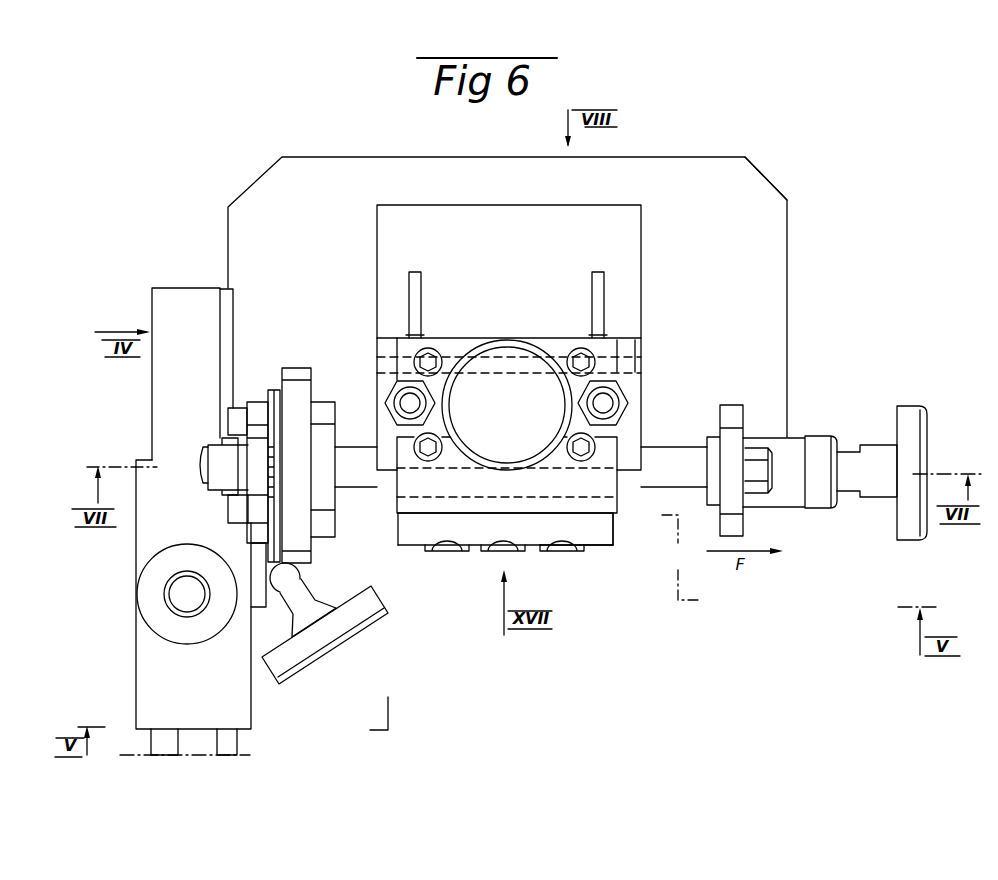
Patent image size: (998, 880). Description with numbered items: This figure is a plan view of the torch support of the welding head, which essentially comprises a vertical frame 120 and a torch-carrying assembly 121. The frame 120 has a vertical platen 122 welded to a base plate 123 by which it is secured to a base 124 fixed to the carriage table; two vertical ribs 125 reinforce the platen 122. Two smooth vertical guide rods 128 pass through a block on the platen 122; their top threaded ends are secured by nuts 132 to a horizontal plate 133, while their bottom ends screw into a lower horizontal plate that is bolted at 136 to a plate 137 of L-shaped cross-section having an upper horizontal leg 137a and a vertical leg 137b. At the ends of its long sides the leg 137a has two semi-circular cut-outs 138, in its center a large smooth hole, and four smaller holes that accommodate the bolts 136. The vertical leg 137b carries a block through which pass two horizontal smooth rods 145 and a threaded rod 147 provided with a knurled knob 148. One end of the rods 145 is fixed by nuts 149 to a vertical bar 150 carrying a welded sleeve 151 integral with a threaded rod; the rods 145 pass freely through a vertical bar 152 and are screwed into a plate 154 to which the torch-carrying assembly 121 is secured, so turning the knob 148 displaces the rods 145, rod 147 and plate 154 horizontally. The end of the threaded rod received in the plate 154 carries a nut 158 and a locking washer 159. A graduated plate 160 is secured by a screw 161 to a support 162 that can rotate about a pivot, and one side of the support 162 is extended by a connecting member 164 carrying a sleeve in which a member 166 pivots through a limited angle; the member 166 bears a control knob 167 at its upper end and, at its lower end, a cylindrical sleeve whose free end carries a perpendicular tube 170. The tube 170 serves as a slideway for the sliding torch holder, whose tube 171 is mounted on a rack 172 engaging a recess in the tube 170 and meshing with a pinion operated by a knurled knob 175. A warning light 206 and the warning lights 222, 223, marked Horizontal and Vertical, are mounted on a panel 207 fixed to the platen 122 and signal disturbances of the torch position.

The vertical frame 120 is at (634, 538).
The torch-carrying assembly 121 is at (132, 406).
The vertical platen 122 is at (625, 360).
The base plate 123 is at (525, 211).
The base 124 is at (747, 193).
The vertical ribs 125 is at (416, 278).
The smooth vertical guide rods 128 is at (412, 403).
The nuts 132 is at (392, 403).
The horizontal plate 133 is at (385, 387).
The bolts 136 is at (432, 350).
The L-shaped plate 137 is at (507, 405).
The upper horizontal leg 137a is at (607, 507).
The vertical leg 137b is at (397, 506).
The semi-circular cut-outs 138 is at (412, 378).
The horizontal smooth rods 145 is at (658, 462).
The threaded rod 147 is at (846, 465).
The knurled knob 148 is at (908, 425).
The nuts 149 is at (757, 462).
The vertical bar 150 is at (734, 414).
The welded sleeve 151 is at (771, 496).
The vertical bar 152 is at (322, 410).
The plate 154 is at (298, 375).
The nut 158 is at (227, 450).
The locking washer 159 is at (243, 478).
The graduated plate 160 is at (275, 395).
The screw 161 is at (237, 423).
The support 162 is at (252, 408).
The connecting member 164 is at (250, 594).
The pivoting member 166 is at (152, 613).
The control knob 167 is at (182, 590).
The tube 170 is at (148, 660).
The tube 171 is at (192, 300).
The rack 172 is at (229, 300).
The knurled knob 175 is at (338, 627).
The warning light 206 is at (565, 555).
The panel 207 is at (425, 533).
The warning light 222 is at (505, 556).
The warning light 223 is at (440, 556).